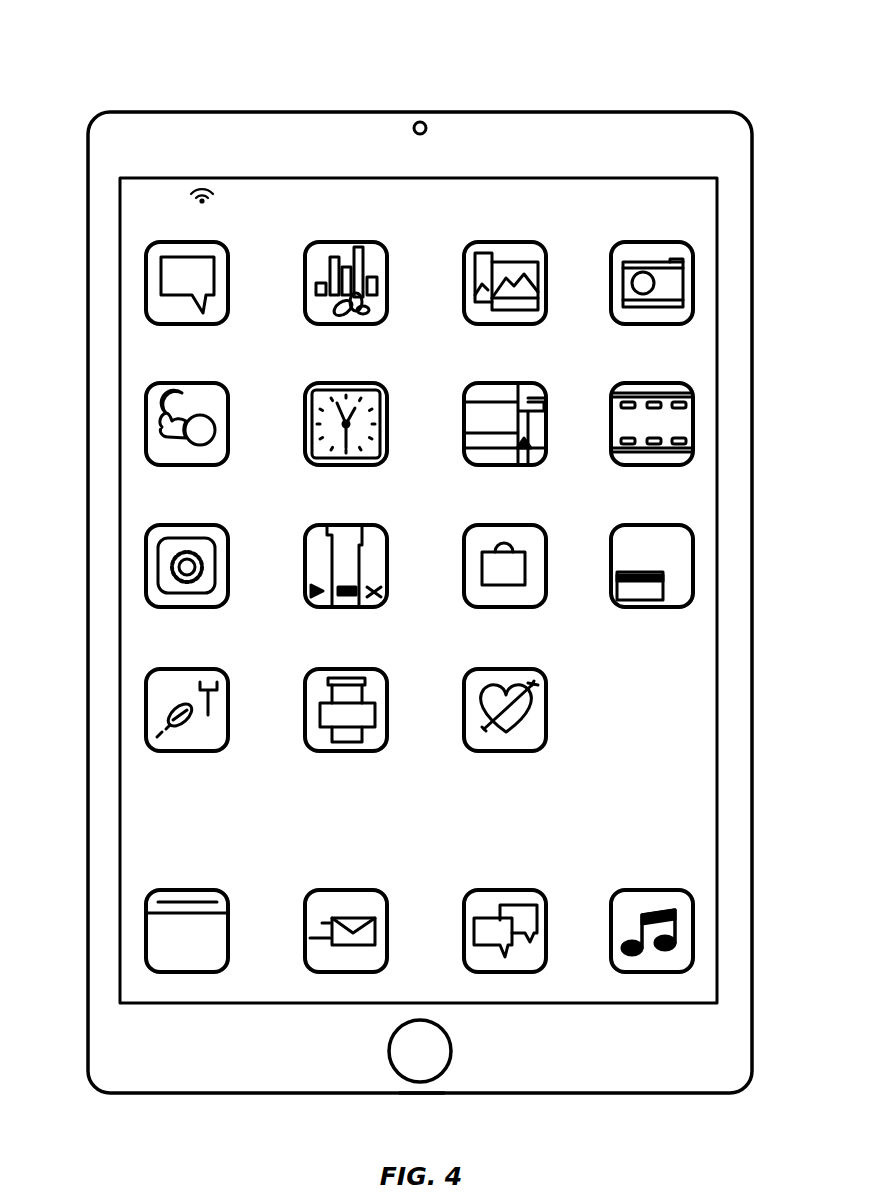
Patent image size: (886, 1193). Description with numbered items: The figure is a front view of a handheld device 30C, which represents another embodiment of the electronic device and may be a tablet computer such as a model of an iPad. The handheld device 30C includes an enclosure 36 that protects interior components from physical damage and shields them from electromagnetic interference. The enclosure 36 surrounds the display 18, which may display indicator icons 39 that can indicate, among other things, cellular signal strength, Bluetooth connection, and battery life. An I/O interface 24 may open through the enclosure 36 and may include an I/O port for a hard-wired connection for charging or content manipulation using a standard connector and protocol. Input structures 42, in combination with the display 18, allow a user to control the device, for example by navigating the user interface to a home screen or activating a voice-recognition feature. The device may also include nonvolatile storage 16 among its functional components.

The handheld device 30C is at (100, 58).
The nonvolatile storage 16 is at (148, 111).
The enclosure 36 is at (672, 111).
The indicator icons 39 is at (203, 186).
The display 18 is at (722, 671).
The input structures 42 is at (452, 1051).
The I/O interface 24 is at (422, 1095).